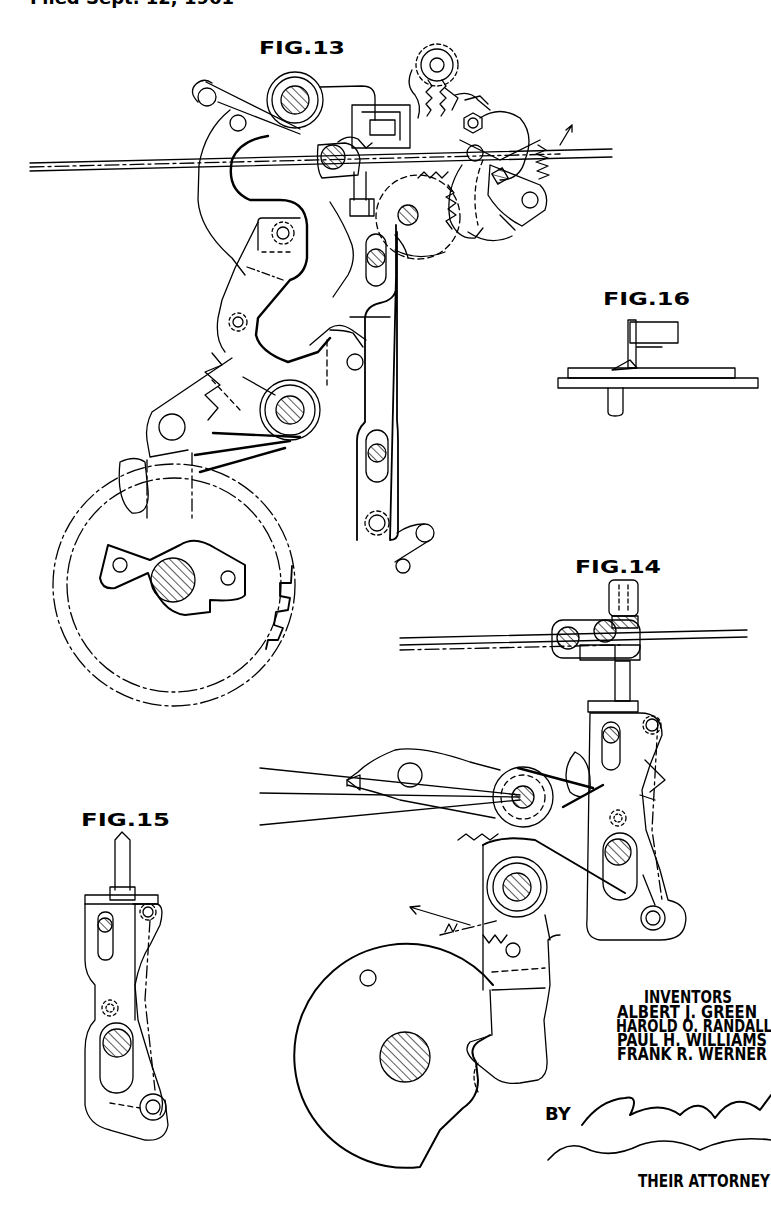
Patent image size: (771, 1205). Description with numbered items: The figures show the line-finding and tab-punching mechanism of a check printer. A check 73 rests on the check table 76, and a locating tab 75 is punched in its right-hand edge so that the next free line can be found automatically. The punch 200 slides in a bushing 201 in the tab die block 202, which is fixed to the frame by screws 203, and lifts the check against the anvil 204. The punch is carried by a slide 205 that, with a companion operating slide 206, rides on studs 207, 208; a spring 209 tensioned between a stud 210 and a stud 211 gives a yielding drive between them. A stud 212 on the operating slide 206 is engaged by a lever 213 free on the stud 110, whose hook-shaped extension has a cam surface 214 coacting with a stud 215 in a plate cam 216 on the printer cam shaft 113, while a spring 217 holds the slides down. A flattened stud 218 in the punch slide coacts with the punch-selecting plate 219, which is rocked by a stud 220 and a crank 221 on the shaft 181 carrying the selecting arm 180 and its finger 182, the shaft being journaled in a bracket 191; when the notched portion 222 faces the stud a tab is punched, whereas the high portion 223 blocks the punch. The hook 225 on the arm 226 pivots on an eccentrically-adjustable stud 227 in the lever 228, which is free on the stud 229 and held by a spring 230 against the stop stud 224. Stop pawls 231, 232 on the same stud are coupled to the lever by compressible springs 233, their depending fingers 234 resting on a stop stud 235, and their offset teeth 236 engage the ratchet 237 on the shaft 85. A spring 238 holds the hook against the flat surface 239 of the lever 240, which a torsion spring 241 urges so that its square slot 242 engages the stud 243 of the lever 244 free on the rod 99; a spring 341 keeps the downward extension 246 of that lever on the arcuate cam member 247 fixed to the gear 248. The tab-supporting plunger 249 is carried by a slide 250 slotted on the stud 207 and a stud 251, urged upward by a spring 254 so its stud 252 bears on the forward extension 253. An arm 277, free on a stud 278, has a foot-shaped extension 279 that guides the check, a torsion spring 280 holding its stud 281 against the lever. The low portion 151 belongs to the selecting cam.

In FIG. 13, the check table 76 is at (584, 151).
In FIG. 16, the check table 76 is at (722, 389).
In FIG. 14, the check table 76 is at (736, 640).
In FIG. 13, the low portion 151 is at (284, 92).
In FIG. 13, the torsion spring 241 is at (208, 86).
In FIG. 13, the flat surface 239 is at (374, 102).
In FIG. 13, the lever 240 is at (199, 151).
In FIG. 13, the stud 243 is at (298, 206).
In FIG. 13, the square slot 242 is at (262, 238).
In FIG. 13, the lever 244 is at (228, 285).
In FIG. 13, the spring 341 is at (212, 368).
In FIG. 13, the tab die block 202 is at (321, 157).
In FIG. 14, the tab die block 202 is at (603, 620).
In FIG. 13, the hook 225 is at (352, 147).
In FIG. 16, the hook 225 is at (640, 352).
In FIG. 13, the arm 226 is at (409, 145).
In FIG. 16, the arm 226 is at (660, 334).
In FIG. 13, the tab-supporting plunger 249 is at (352, 190).
In FIG. 16, the tab-supporting plunger 249 is at (620, 402).
In FIG. 13, the spring 238 is at (412, 88).
In FIG. 13, the arm 277 is at (440, 48).
In FIG. 13, the stud 278 is at (447, 60).
In FIG. 13, the stud 281 is at (452, 88).
In FIG. 13, the torsion spring 280 is at (472, 96).
In FIG. 13, the lever 228 is at (490, 98).
In FIG. 13, the stop stud 224 is at (478, 108).
In FIG. 13, the eccentrically-adjustable stud 227 is at (485, 118).
In FIG. 13, the stud 229 is at (490, 142).
In FIG. 13, the depending fingers 234 is at (490, 158).
In FIG. 13, the spring 230 is at (554, 156).
In FIG. 13, the stop stud 235 is at (518, 185).
In FIG. 13, the compressible springs 233 is at (514, 222).
In FIG. 13, the stop pawl 232 is at (507, 238).
In FIG. 13, the stop pawl 231 is at (466, 240).
In FIG. 13, the foot-shaped extension 279 is at (410, 190).
In FIG. 13, the offset teeth 236 is at (410, 203).
In FIG. 13, the shaft 85 is at (405, 236).
In FIG. 13, the ratchet 237 is at (432, 252).
In FIG. 13, the stud 207 is at (367, 263).
In FIG. 14, the stud 207 is at (604, 735).
In FIG. 15, the stud 207 is at (100, 925).
In FIG. 13, the slide 250 is at (380, 318).
In FIG. 13, the forward extension 253 is at (316, 345).
In FIG. 13, the stud 252 is at (363, 362).
In FIG. 13, the stud 251 is at (386, 451).
In FIG. 13, the spring 254 is at (395, 530).
In FIG. 13, the rod 99 is at (295, 426).
In FIG. 13, the downward extension 246 is at (128, 508).
In FIG. 13, the gear 248 is at (103, 498).
In FIG. 13, the arcuate cam member 247 is at (110, 546).
In FIG. 13, the printer cam shaft 113 is at (163, 590).
In FIG. 14, the printer cam shaft 113 is at (388, 1065).
In FIG. 16, the locating tab 75 is at (620, 366).
In FIG. 16, the check 73 is at (722, 368).
In FIG. 14, the punch 200 is at (632, 680).
In FIG. 15, the punch 200 is at (131, 850).
In FIG. 14, the anvil 204 is at (639, 624).
In FIG. 14, the screws 203 is at (565, 628).
In FIG. 14, the bushing 201 is at (641, 659).
In FIG. 14, the slide 205 is at (640, 708).
In FIG. 15, the slide 205 is at (135, 898).
In FIG. 14, the operating slide 206 is at (665, 712).
In FIG. 15, the operating slide 206 is at (100, 977).
In FIG. 14, the spring 209 is at (665, 812).
In FIG. 15, the spring 209 is at (160, 980).
In FIG. 14, the stud 211 is at (662, 727).
In FIG. 15, the stud 211 is at (157, 910).
In FIG. 14, the punch-selecting plate 219 is at (660, 774).
In FIG. 14, the notched portion 222 is at (658, 799).
In FIG. 14, the flattened stud 218 is at (640, 824).
In FIG. 15, the flattened stud 218 is at (100, 1010).
In FIG. 14, the crank 221 is at (572, 755).
In FIG. 14, the stud 220 is at (592, 798).
In FIG. 14, the high portion 223 is at (588, 822).
In FIG. 14, the stud 208 is at (625, 860).
In FIG. 15, the stud 208 is at (108, 1045).
In FIG. 14, the stud 210 is at (652, 893).
In FIG. 14, the stud 212 is at (666, 920).
In FIG. 15, the stud 212 is at (167, 1103).
In FIG. 14, the lever 213 is at (595, 938).
In FIG. 14, the stud 110 is at (503, 884).
In FIG. 14, the shaft 181 is at (518, 785).
In FIG. 14, the selecting arm 180 is at (462, 758).
In FIG. 14, the finger 182 is at (358, 775).
In FIG. 14, the bracket 191 is at (478, 836).
In FIG. 14, the spring 217 is at (442, 913).
In FIG. 14, the stud 215 is at (377, 977).
In FIG. 14, the plate cam 216 is at (335, 1140).
In FIG. 14, the cam surface 214 is at (478, 1088).